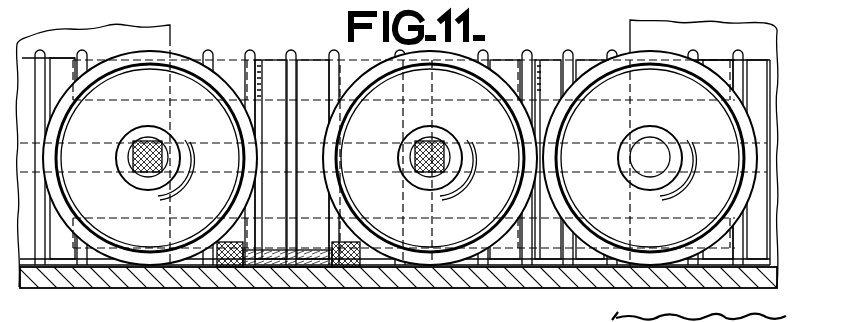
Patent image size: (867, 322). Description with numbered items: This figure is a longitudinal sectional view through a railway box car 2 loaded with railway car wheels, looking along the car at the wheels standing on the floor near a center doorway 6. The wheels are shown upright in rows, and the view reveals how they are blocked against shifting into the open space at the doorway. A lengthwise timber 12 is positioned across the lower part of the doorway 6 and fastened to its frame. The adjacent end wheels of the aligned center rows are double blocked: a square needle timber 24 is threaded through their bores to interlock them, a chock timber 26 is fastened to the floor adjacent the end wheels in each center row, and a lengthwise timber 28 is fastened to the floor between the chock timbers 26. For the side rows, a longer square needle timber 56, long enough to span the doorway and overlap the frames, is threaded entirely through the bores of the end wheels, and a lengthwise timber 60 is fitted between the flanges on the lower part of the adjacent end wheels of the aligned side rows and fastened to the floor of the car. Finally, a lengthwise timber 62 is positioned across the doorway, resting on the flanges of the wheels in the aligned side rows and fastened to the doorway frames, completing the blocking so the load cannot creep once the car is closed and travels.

The railway box car 2 is at (138, 272).
The center doorway 6 is at (630, 33).
The lengthwise timber 12 is at (553, 264).
The square needle timber 24 is at (137, 164).
The chock timber 26 is at (232, 258).
The lengthwise timber 28 is at (312, 257).
The square needle timber 56 is at (193, 146).
The lengthwise timber 60 is at (377, 263).
The lengthwise timber 62 is at (562, 60).